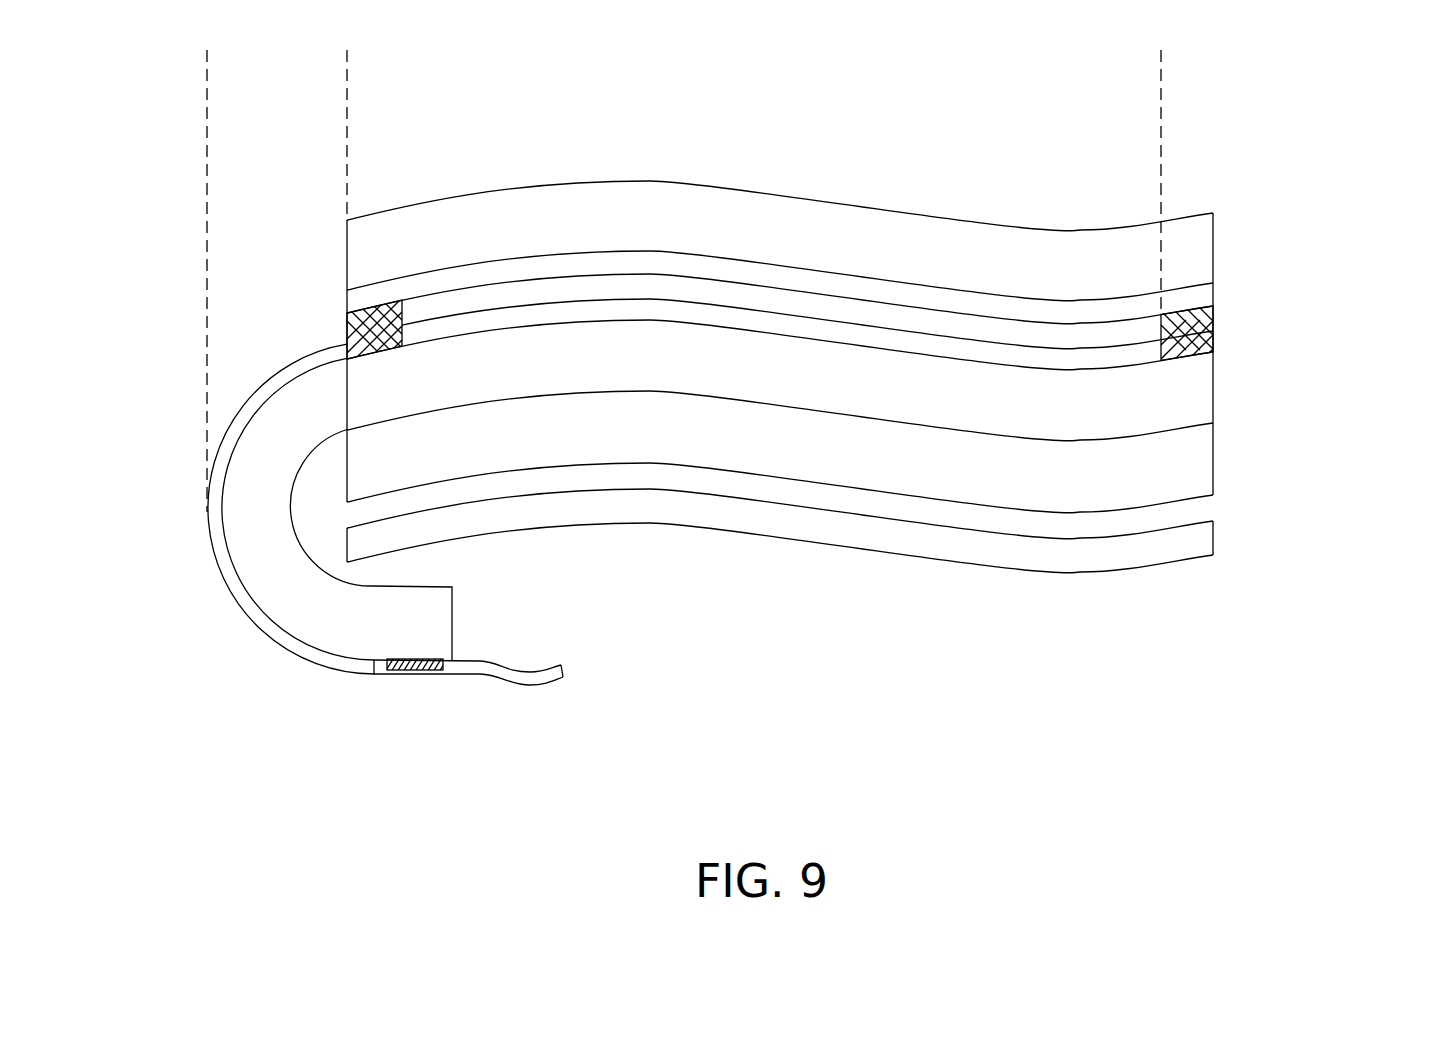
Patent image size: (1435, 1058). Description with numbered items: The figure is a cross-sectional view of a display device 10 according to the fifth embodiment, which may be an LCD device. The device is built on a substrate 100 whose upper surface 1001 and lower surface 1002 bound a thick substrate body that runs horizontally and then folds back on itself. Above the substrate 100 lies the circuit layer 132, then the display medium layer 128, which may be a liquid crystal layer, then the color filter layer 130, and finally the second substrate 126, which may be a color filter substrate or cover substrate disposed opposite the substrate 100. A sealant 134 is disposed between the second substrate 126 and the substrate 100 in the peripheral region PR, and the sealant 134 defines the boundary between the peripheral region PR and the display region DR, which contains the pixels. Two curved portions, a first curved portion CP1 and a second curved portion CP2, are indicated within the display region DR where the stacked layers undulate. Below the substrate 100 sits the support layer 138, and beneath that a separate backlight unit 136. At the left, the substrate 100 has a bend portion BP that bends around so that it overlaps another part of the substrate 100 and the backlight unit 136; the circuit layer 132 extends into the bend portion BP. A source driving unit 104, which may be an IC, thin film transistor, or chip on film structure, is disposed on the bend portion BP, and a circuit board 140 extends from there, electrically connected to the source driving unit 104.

The display device 10 is at (1293, 148).
The substrate 100 is at (1195, 407).
The first surface of substrate 1001 is at (1140, 367).
The second surface of substrate 1002 is at (1148, 433).
The source driving unit 104 is at (417, 670).
The second substrate 126 is at (1192, 260).
The display medium layer 128 is at (1135, 331).
The color filter layer 130 is at (1192, 295).
The circuit layer 132 is at (242, 423).
The sealant 134 is at (377, 320).
The backlight unit 136 is at (1195, 540).
The support layer 138 is at (1190, 475).
The circuit board 140 is at (538, 695).
The peripheral region PR is at (347, 83).
The display region DR is at (1161, 83).
The first curved portion CP1 is at (650, 388).
The second curved portion CP2 is at (1020, 405).
The bend portion BP is at (252, 513).